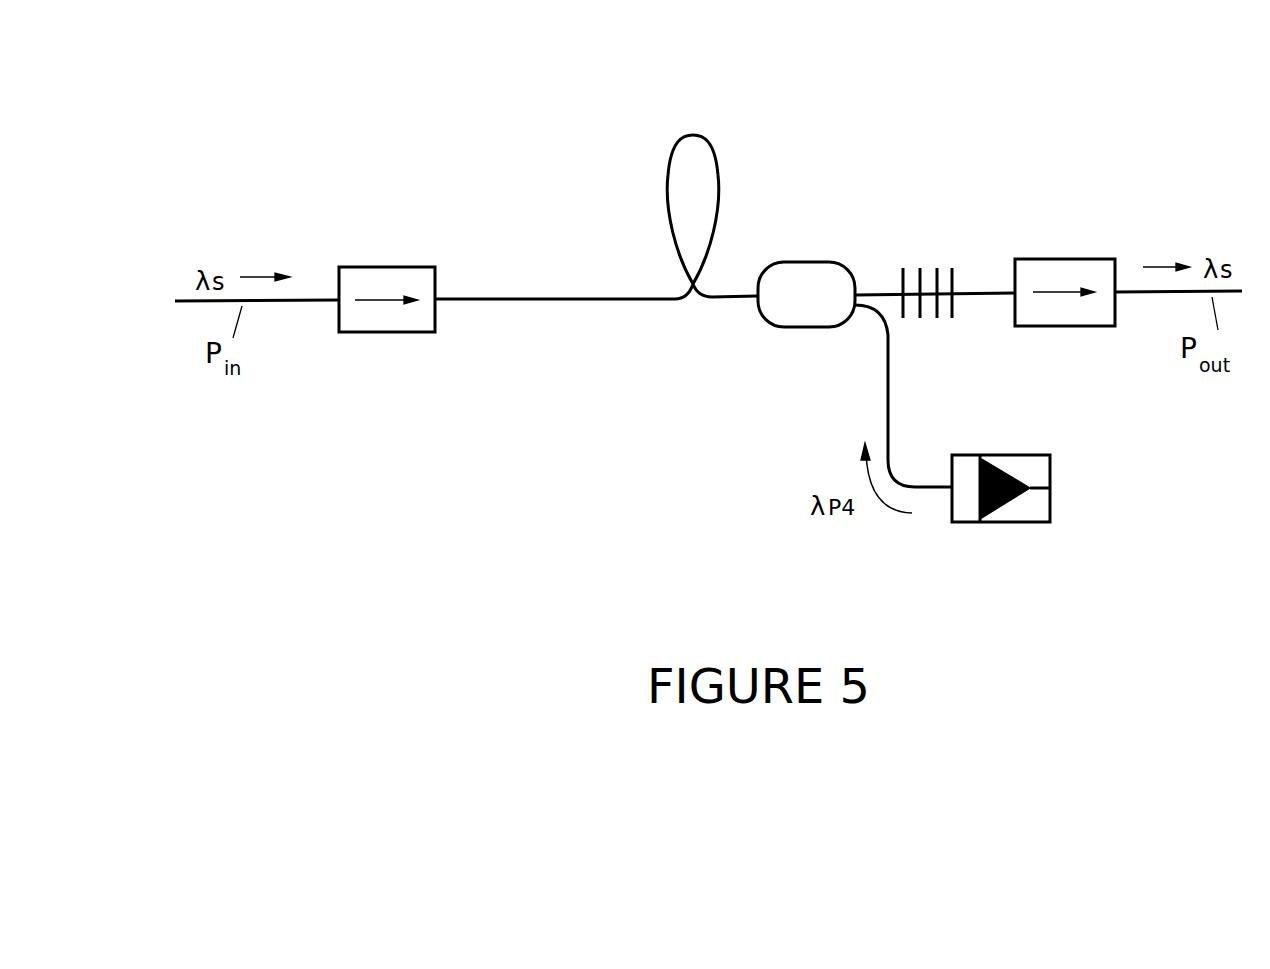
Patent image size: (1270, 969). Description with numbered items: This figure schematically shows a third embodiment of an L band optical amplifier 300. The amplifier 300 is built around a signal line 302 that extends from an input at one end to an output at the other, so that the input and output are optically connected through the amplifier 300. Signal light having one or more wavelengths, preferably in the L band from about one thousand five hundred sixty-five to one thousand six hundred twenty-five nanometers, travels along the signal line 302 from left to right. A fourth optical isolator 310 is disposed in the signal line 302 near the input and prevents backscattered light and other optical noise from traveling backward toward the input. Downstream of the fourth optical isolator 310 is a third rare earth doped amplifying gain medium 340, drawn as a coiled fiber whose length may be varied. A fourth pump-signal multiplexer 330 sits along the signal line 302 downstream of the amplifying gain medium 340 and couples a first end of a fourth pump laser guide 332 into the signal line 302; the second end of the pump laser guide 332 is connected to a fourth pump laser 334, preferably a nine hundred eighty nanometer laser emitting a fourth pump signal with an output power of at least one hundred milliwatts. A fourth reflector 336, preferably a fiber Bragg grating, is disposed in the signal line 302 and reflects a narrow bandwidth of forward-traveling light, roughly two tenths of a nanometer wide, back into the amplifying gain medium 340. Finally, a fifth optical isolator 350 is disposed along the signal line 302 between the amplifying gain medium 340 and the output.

The L band optical amplifier 300 is at (516, 104).
The signal line 302 is at (307, 305).
The fourth optical isolator 310 is at (370, 265).
The fourth pump-signal multiplexer 330 is at (823, 262).
The fourth pump laser guide 332 is at (885, 375).
The fourth pump laser 334 is at (1017, 523).
The fourth reflector 336 is at (937, 262).
The third rare earth doped amplifying gain medium 340 is at (668, 170).
The fifth optical isolator 350 is at (1080, 258).